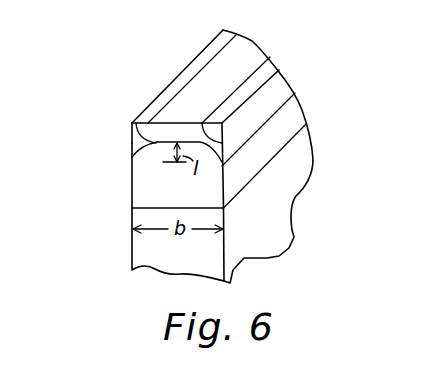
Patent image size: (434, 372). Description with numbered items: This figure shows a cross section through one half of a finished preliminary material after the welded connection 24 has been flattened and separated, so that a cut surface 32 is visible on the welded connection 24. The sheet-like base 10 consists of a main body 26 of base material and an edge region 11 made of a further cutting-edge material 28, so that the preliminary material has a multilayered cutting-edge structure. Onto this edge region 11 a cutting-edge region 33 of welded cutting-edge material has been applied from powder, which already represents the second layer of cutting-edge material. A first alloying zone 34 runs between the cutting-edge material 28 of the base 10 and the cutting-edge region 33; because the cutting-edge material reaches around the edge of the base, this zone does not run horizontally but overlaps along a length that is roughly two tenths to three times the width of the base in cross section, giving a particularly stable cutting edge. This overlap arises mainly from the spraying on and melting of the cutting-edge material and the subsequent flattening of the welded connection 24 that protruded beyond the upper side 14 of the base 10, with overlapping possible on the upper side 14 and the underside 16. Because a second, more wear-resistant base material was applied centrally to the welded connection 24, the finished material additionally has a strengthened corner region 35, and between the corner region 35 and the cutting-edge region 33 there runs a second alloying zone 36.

The sheet-like base 10 is at (132, 248).
The edge region 11 is at (224, 167).
The upper side 14 is at (139, 108).
The underside 16 is at (289, 193).
The welded connection 24 is at (277, 100).
The main body 26 is at (143, 216).
The cutting-edge material 28 is at (160, 185).
The cut surface 32 is at (238, 62).
The cutting-edge region 33 is at (132, 145).
The first alloying zone 34 is at (223, 133).
The corner region 35 is at (132, 126).
The second alloying zone 36 is at (132, 135).